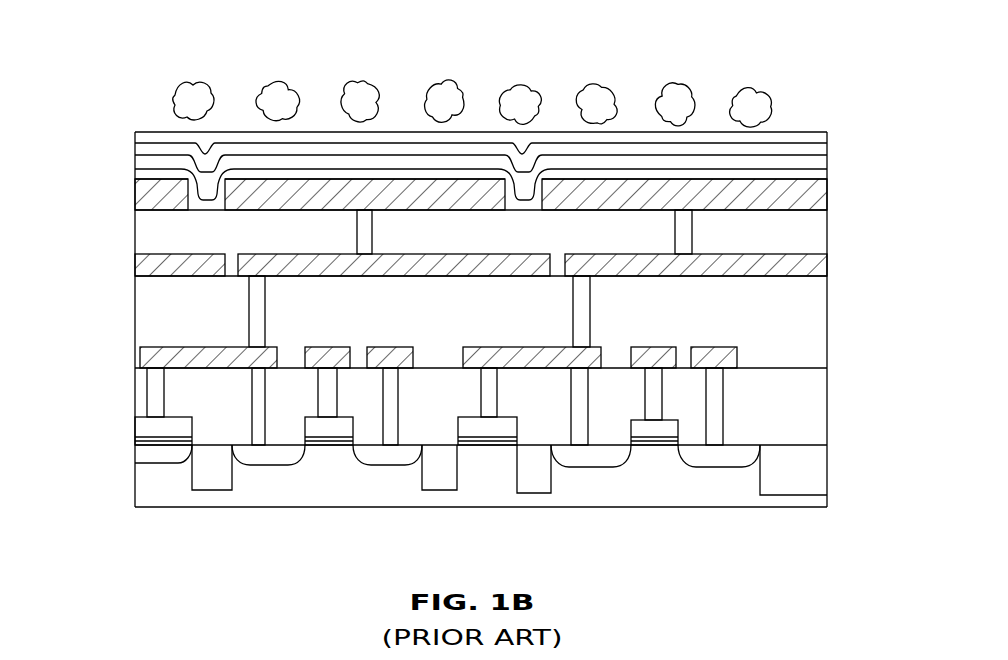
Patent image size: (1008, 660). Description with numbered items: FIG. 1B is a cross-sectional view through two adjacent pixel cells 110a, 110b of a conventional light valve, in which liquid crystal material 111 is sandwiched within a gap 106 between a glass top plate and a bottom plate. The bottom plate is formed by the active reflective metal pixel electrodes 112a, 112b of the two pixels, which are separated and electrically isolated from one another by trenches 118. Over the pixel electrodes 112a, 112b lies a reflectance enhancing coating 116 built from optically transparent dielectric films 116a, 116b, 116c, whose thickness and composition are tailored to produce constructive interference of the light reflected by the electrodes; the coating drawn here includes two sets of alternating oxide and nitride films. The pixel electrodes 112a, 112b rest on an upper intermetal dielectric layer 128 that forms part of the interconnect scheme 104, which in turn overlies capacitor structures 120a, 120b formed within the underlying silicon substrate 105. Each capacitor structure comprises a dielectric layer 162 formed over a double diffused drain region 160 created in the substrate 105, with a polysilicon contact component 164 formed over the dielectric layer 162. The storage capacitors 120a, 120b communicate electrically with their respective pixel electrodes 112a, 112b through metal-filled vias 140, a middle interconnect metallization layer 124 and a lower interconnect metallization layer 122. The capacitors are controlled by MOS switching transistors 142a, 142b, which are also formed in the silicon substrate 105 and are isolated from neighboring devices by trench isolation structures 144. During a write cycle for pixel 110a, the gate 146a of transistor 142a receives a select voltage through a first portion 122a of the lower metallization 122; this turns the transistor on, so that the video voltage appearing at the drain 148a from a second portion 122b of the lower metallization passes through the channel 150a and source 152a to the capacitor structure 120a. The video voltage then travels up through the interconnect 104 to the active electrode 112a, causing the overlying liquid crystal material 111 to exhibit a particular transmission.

The interconnect scheme 104 is at (829, 232).
The silicon substrate 105 is at (818, 508).
The gap 106 is at (838, 75).
The pixel cell 110a is at (322, 118).
The pixel cell 110b is at (638, 118).
The liquid crystal material 111 is at (762, 98).
The pixel electrode 112a is at (398, 195).
The pixel electrode 112b is at (818, 202).
The reflectance enhancing coating 116 is at (838, 134).
The optically transparent dielectric film 116a is at (140, 137).
The protective layer 116b is at (140, 162).
The protective layer 116c is at (140, 176).
The trench 118 is at (534, 200).
The capacitor structure 120a is at (146, 482).
The capacitor structure 120b is at (488, 485).
The lower interconnect metallization layer 122 is at (193, 352).
The first portion of lower interconnect metallization 122a is at (338, 357).
The second portion of lower interconnect metallization 122b is at (388, 357).
The middle interconnect metallization layer 124 is at (167, 262).
The upper intermetal dielectric layer 128 is at (140, 238).
The metal-filled via 140 is at (366, 235).
The MOS switching transistor 142a is at (320, 487).
The MOS switching transistor 142b is at (655, 480).
The trench isolation structure 144 is at (212, 478).
The gate 146a is at (342, 430).
The drain 148a is at (400, 457).
The channel 150a is at (323, 452).
The source 152a is at (273, 452).
The double diffused drain region 160 is at (142, 453).
The dielectric layer 162 is at (142, 438).
The polysilicon contact component 164 is at (142, 427).